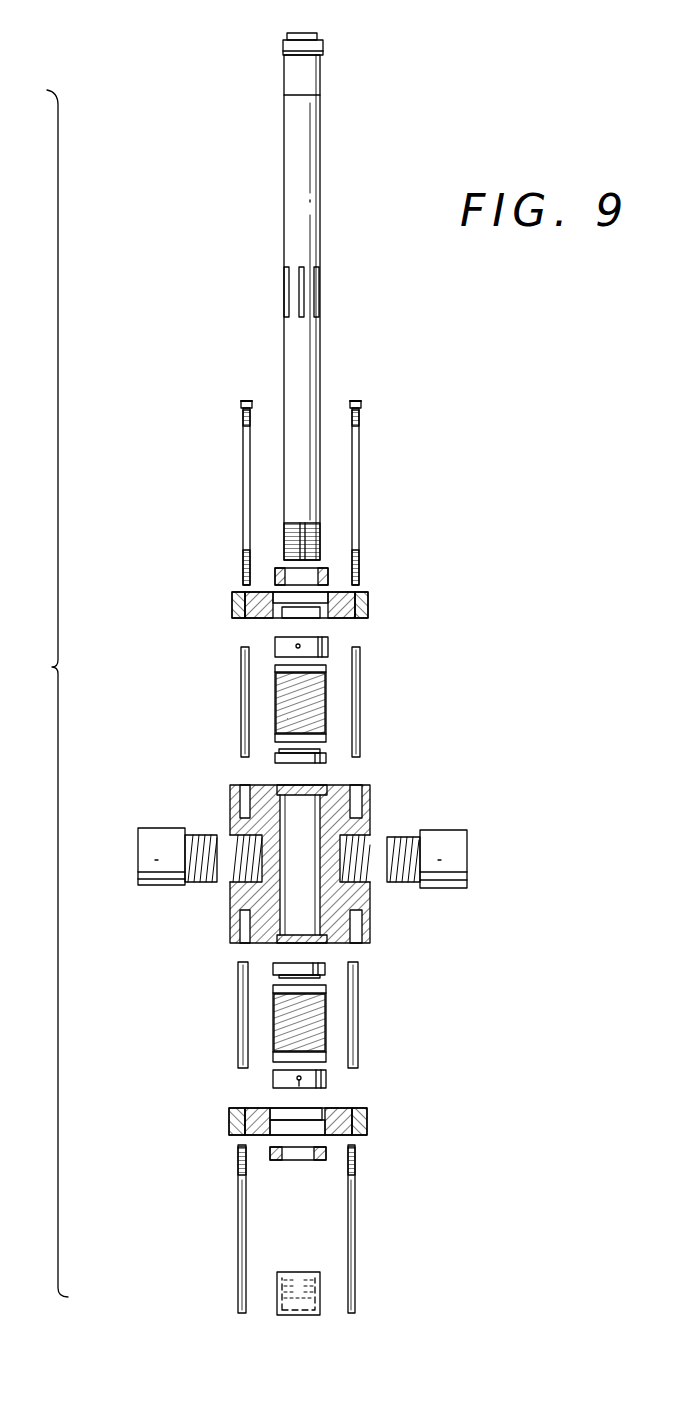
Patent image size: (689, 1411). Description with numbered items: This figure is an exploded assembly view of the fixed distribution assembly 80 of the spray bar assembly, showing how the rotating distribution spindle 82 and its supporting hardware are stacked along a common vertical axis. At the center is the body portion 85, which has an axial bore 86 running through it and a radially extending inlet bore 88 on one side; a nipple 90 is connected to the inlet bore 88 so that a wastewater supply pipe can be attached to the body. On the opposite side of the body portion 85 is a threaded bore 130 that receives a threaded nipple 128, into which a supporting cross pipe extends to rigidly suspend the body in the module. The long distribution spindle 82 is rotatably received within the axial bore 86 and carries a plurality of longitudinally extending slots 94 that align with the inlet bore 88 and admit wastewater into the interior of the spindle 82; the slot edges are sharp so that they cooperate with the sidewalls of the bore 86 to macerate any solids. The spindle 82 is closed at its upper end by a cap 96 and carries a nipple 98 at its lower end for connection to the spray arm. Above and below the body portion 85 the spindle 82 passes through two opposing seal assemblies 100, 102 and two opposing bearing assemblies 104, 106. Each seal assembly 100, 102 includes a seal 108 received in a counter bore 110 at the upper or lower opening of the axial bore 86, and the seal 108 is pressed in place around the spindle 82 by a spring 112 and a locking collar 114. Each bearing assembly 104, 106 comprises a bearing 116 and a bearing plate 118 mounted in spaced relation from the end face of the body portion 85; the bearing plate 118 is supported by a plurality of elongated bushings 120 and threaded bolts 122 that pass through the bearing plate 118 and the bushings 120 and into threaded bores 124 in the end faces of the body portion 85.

The distribution assembly 80 is at (39, 693).
The distribution spindle 82 is at (325, 170).
The body portion 85 is at (228, 910).
The axial bore 86 is at (320, 820).
The inlet bore 88 is at (365, 878).
The nipple 90 is at (452, 849).
The slots 94 is at (301, 292).
The cap 96 is at (322, 36).
The nipple 98 is at (322, 1290).
The seal assembly 100 is at (331, 708).
The seal assembly 102 is at (331, 1026).
The bearing assembly 104 is at (378, 600).
The bearing assembly 106 is at (378, 1122).
The seal 108 is at (275, 758).
The counter bore 110 is at (288, 786).
The spring 112 is at (327, 688).
The locking collar 114 is at (328, 645).
The bearing 116 is at (325, 556).
The bearing plate 118 is at (240, 596).
The elongated bushings 120 is at (242, 655).
The threaded bolts 122 is at (357, 443).
The threaded bores 124 is at (243, 783).
The threaded nipple 128 is at (150, 852).
The threaded bore 130 is at (233, 877).